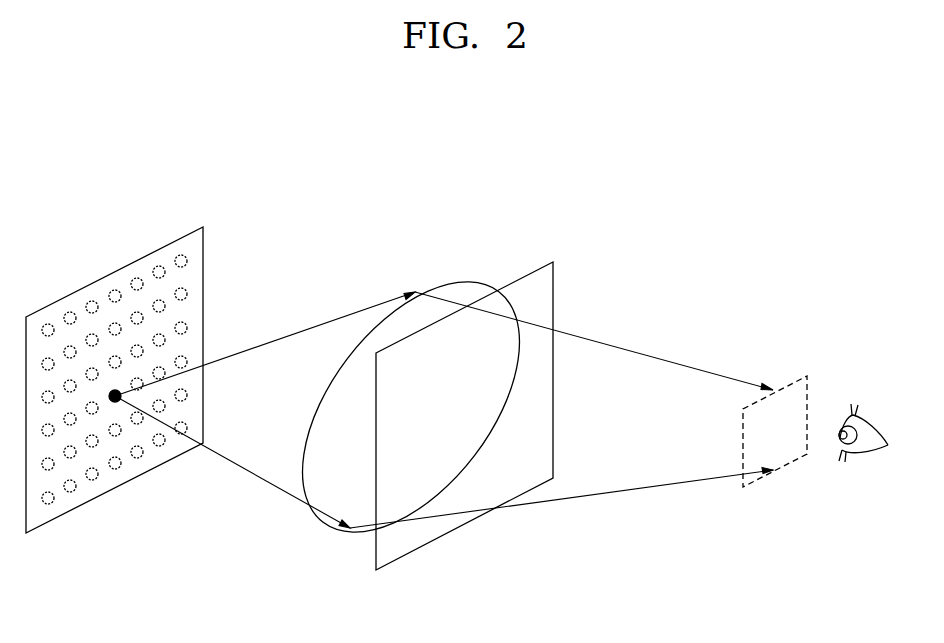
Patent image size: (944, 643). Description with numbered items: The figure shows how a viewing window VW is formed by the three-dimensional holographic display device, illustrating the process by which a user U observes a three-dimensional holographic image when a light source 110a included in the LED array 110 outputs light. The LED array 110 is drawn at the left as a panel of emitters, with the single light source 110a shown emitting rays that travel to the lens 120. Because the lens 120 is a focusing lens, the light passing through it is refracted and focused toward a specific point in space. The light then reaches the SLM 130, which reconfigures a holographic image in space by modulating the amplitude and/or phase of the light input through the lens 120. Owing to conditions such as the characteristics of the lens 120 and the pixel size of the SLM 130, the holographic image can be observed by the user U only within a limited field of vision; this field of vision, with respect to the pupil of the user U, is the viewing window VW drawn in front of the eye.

The LED array 110 is at (200, 243).
The light source 110a is at (118, 401).
The lens 120 is at (463, 282).
The SLM 130 is at (555, 288).
The viewing window VW is at (810, 383).
The user U is at (863, 453).